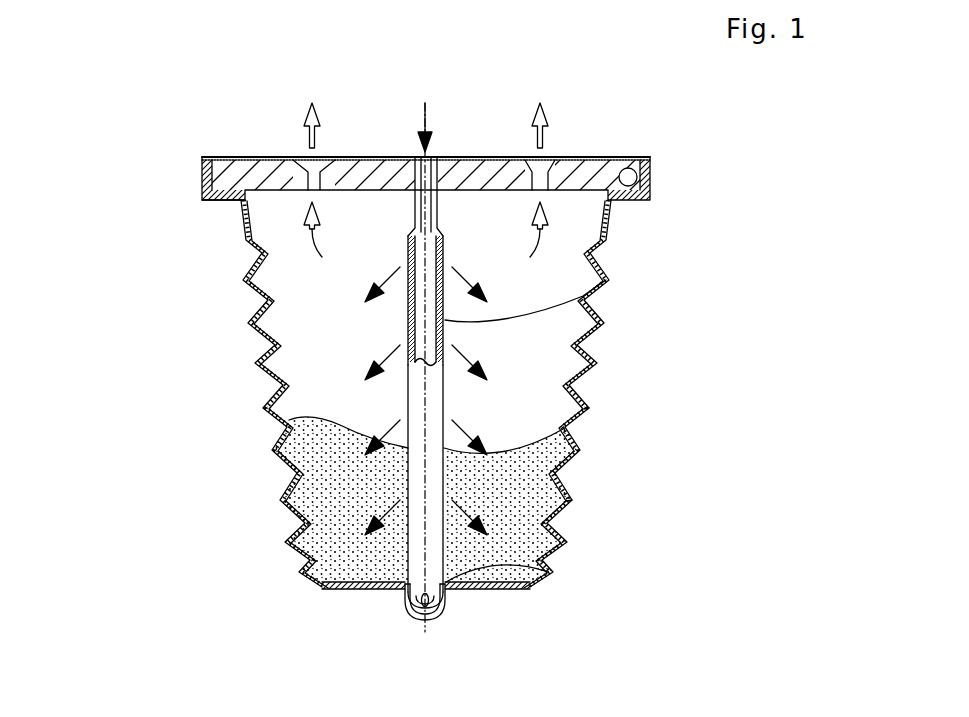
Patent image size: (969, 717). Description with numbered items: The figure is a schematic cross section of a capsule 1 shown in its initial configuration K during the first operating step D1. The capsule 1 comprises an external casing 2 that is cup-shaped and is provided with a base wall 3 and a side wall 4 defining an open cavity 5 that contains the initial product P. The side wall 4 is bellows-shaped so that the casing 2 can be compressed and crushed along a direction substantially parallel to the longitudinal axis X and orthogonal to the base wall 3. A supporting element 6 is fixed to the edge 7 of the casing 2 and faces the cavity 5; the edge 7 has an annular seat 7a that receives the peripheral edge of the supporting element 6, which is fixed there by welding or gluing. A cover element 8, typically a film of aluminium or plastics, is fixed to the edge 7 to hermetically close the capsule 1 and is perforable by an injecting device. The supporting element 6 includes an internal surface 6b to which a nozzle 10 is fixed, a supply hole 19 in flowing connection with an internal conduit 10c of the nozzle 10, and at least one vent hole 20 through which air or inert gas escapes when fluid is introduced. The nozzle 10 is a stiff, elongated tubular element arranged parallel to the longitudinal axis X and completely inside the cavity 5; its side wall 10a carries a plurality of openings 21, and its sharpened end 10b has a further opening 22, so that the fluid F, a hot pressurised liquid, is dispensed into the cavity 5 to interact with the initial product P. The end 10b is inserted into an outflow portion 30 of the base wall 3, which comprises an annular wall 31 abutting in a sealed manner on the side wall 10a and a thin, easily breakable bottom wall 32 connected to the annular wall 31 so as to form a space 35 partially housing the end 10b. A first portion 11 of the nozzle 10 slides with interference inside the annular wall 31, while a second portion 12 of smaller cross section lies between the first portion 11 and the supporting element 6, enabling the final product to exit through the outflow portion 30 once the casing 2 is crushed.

The capsule 1 is at (160, 72).
The external casing 2 is at (612, 372).
The base wall 3 is at (330, 590).
The side wall 4 is at (604, 320).
The cavity 5 is at (514, 373).
The supporting element 6 is at (597, 157).
The internal surface 6b is at (245, 212).
The edge 7 is at (202, 182).
The annular seat 7a is at (650, 172).
The cover element 8 is at (232, 157).
The nozzle 10 is at (408, 317).
The side wall of the nozzle 10a is at (408, 396).
The sharpened end 10b is at (406, 582).
The internal conduit 10c is at (408, 247).
The first portion 11 is at (478, 403).
The second portion 12 is at (460, 220).
The supply hole 19 is at (435, 157).
The vent hole 20 is at (318, 157).
The openings 21 is at (610, 279).
The further opening 22 is at (552, 572).
The outflow portion 30 is at (462, 615).
The annular wall 31 is at (403, 599).
The bottom wall 32 is at (426, 628).
The space 35 is at (412, 613).
The initial product P is at (565, 532).
The fluid F is at (372, 368).
The initial configuration K is at (588, 620).
The first operating step D1 is at (228, 590).
The longitudinal axis X is at (487, 157).